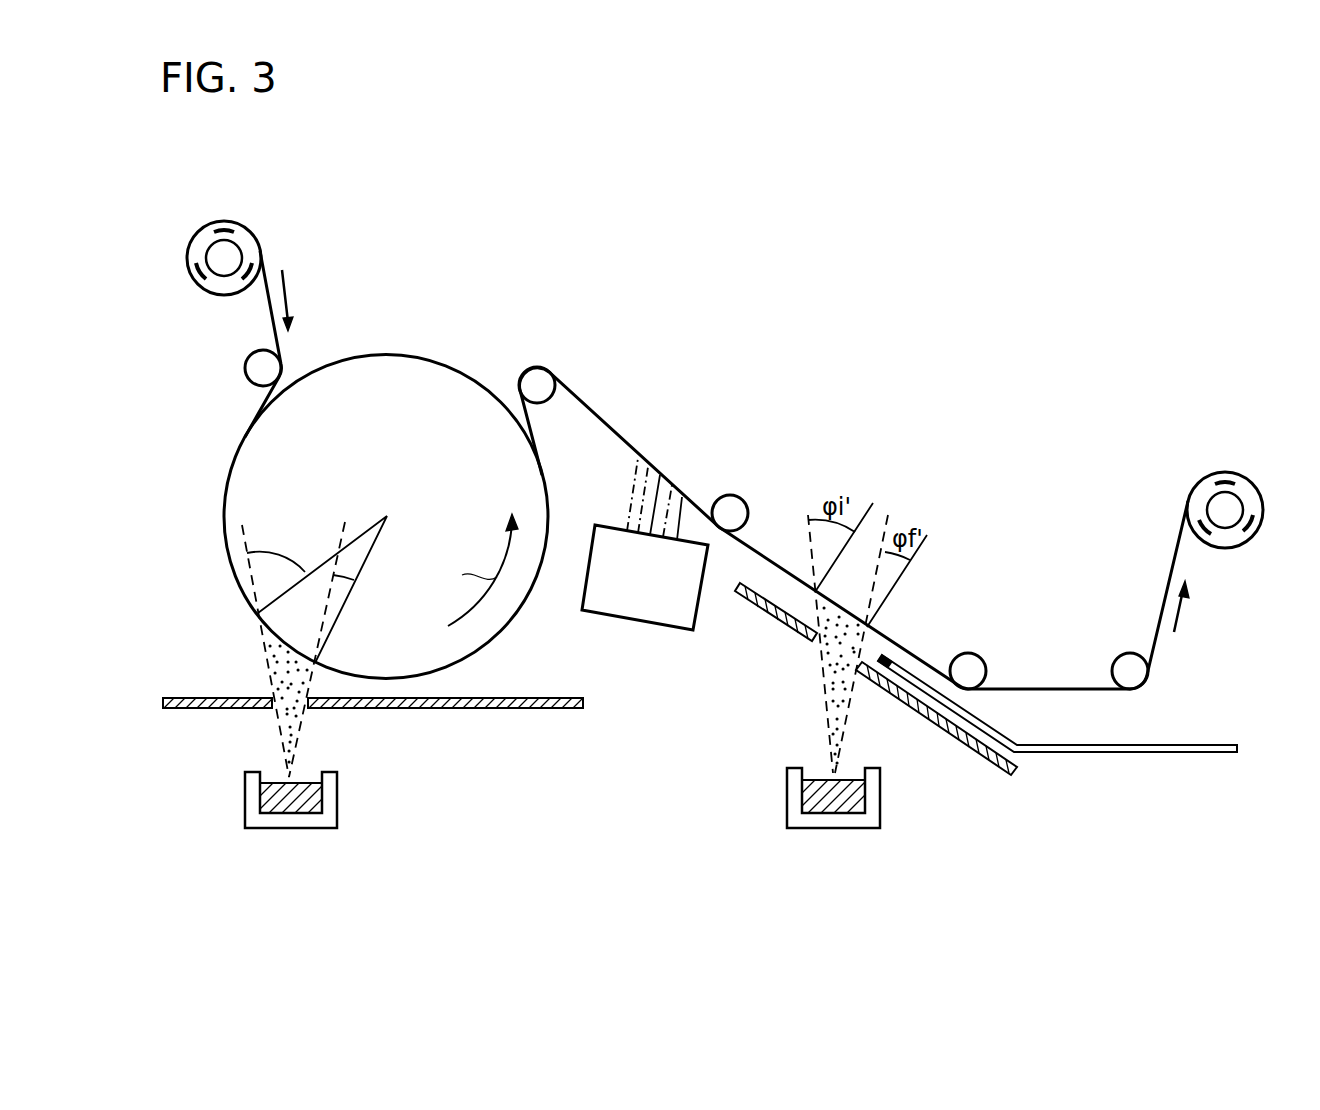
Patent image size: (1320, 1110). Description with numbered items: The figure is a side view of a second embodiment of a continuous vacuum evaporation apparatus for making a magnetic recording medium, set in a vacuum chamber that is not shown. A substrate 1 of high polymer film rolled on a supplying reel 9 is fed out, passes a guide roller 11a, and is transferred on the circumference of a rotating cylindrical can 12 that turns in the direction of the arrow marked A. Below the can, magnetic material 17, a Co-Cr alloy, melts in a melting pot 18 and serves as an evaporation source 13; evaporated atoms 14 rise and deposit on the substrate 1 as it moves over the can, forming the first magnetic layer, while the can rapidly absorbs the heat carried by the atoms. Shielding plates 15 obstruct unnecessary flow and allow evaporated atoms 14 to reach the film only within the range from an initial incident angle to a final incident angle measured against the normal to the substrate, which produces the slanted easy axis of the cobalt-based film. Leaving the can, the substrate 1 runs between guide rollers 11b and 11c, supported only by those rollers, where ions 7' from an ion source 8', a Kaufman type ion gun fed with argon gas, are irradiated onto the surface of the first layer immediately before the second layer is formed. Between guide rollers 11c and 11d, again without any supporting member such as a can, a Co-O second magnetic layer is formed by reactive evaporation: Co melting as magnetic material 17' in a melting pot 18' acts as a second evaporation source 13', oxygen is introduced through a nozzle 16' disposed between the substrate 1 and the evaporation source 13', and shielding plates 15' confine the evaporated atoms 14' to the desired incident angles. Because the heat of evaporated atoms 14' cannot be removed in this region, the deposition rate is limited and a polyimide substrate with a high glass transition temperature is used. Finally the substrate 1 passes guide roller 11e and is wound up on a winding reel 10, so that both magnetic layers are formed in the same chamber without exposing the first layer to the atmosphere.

The substrate 1 is at (1170, 570).
The ions 7' is at (624, 499).
The ion source 8' is at (645, 616).
The supplying reel 9 is at (235, 248).
The winding reel 10 is at (1213, 503).
The guide roller 11a is at (278, 372).
The guide roller 11b is at (541, 378).
The guide roller 11c is at (735, 508).
The guide roller 11d is at (967, 665).
The guide roller 11e is at (1128, 663).
The cylindrical can 12 is at (417, 357).
The evaporation source 13 is at (329, 832).
The evaporation source 13' is at (871, 827).
The evaporated atoms 14 is at (249, 702).
The evaporated atoms 14' is at (800, 685).
The shielding plates 15 is at (360, 736).
The shielding plates 15' is at (876, 710).
The nozzle 16' is at (1068, 736).
The magnetic material 17 is at (291, 837).
The magnetic material 17' is at (833, 833).
The melting pot 18 is at (329, 800).
The melting pot 18' is at (871, 798).